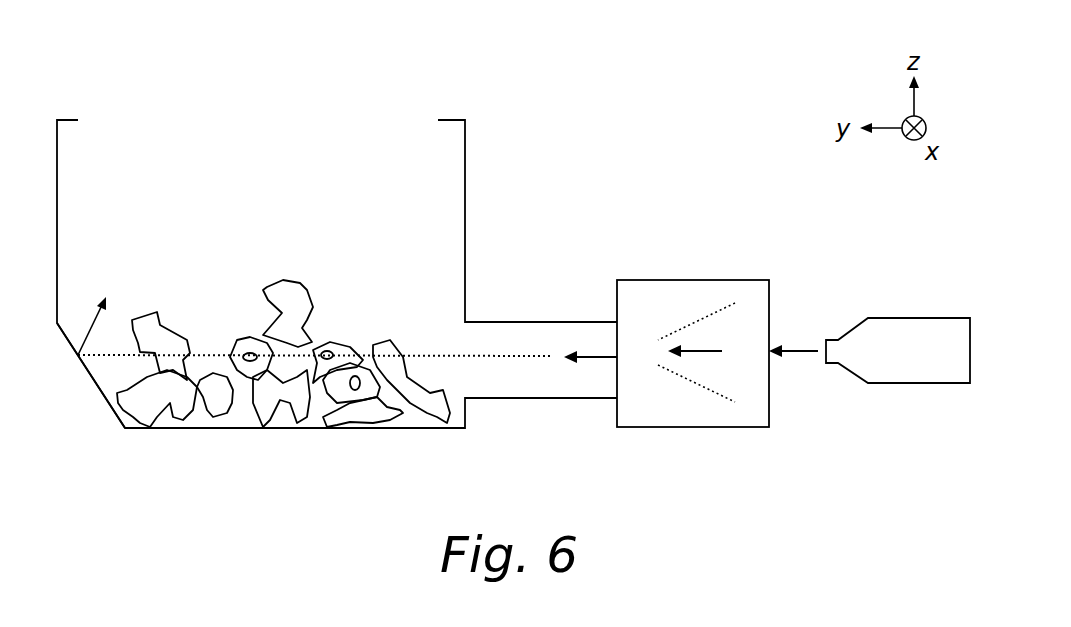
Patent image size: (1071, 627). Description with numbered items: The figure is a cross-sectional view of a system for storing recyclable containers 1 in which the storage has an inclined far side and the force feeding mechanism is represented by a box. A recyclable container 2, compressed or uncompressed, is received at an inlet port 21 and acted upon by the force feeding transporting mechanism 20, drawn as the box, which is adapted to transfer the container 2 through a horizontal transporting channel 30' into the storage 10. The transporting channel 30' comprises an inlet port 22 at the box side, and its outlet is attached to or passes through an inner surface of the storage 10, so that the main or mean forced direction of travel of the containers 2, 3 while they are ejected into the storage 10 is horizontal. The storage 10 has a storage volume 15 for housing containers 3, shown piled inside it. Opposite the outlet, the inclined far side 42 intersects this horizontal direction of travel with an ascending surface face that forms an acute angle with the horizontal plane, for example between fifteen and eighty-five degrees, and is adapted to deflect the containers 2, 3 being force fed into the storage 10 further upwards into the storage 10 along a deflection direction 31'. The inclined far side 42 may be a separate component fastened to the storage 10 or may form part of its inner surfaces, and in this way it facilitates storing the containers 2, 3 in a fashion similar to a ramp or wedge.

The system for storing recyclable containers 1 is at (726, 134).
The container 2 is at (917, 318).
The containers 3 is at (302, 283).
The storage 10 is at (465, 142).
The storage volume 15 is at (221, 159).
The force feeding transporting mechanism 20 is at (728, 280).
The inlet port 21 is at (800, 350).
The inlet port 22 is at (594, 356).
The horizontal transporting channel 30' is at (333, 288).
The deflection direction 31' is at (140, 309).
The inclined far side 42 is at (81, 363).